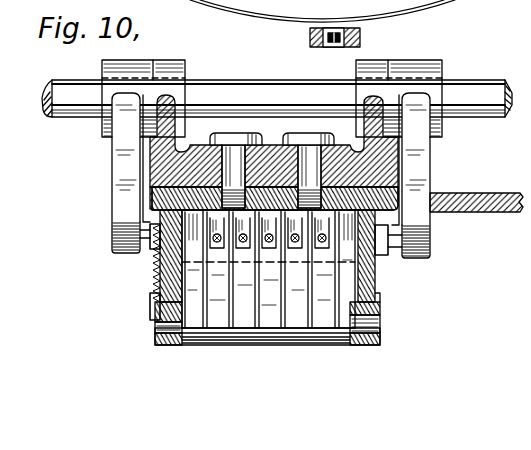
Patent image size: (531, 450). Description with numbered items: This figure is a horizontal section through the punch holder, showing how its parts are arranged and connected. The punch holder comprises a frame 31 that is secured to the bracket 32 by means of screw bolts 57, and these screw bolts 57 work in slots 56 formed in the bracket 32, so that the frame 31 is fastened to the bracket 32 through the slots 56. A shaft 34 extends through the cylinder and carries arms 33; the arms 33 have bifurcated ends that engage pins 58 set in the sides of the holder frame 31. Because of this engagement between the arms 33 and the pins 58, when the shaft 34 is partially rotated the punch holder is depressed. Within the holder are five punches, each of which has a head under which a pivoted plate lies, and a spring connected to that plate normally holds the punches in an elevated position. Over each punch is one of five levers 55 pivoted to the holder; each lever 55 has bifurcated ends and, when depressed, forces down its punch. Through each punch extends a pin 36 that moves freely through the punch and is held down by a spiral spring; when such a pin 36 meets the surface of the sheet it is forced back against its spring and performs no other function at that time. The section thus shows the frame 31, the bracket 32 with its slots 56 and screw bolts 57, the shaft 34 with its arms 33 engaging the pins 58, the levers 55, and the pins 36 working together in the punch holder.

The frame 31 is at (380, 302).
The bracket 32 is at (180, 162).
The arms 33 is at (118, 173).
The shaft 34 is at (492, 82).
The pin 36 is at (322, 248).
The levers 55 is at (247, 340).
The slots 56 is at (276, 155).
The screw bolts 57 is at (235, 157).
The pins 58 is at (140, 254).